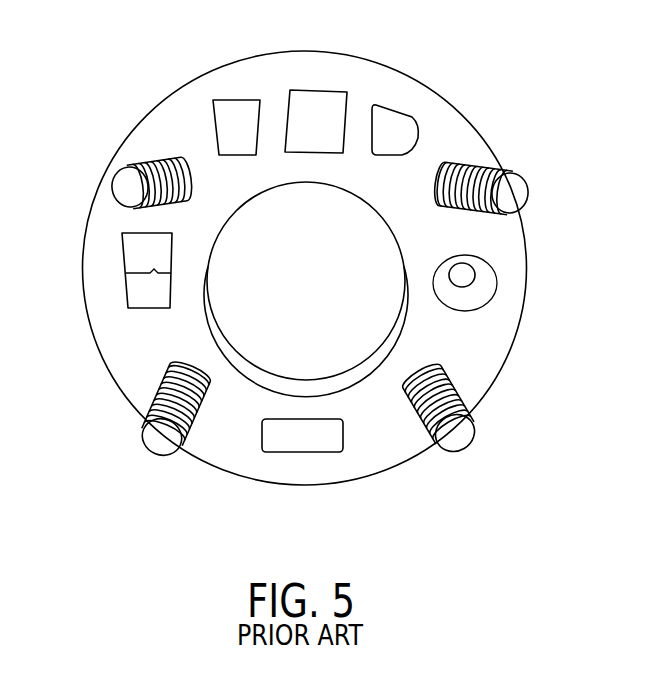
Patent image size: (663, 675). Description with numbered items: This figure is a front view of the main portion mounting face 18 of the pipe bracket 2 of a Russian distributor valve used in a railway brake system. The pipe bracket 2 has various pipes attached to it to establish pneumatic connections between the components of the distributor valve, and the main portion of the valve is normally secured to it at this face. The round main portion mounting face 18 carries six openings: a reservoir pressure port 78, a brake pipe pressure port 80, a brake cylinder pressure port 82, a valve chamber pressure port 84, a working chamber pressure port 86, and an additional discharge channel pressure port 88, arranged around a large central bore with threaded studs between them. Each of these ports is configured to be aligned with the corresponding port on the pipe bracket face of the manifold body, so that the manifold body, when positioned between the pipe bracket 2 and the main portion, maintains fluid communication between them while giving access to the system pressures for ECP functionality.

The pipe bracket 2 is at (468, 142).
The main portion mounting face 18 is at (178, 136).
The reservoir pressure port 78 is at (233, 100).
The brake pipe pressure port 80 is at (385, 103).
The brake cylinder pressure port 82 is at (318, 90).
The valve chamber pressure port 84 is at (473, 273).
The working chamber pressure port 86 is at (280, 440).
The additional discharge channel pressure port 88 is at (143, 257).